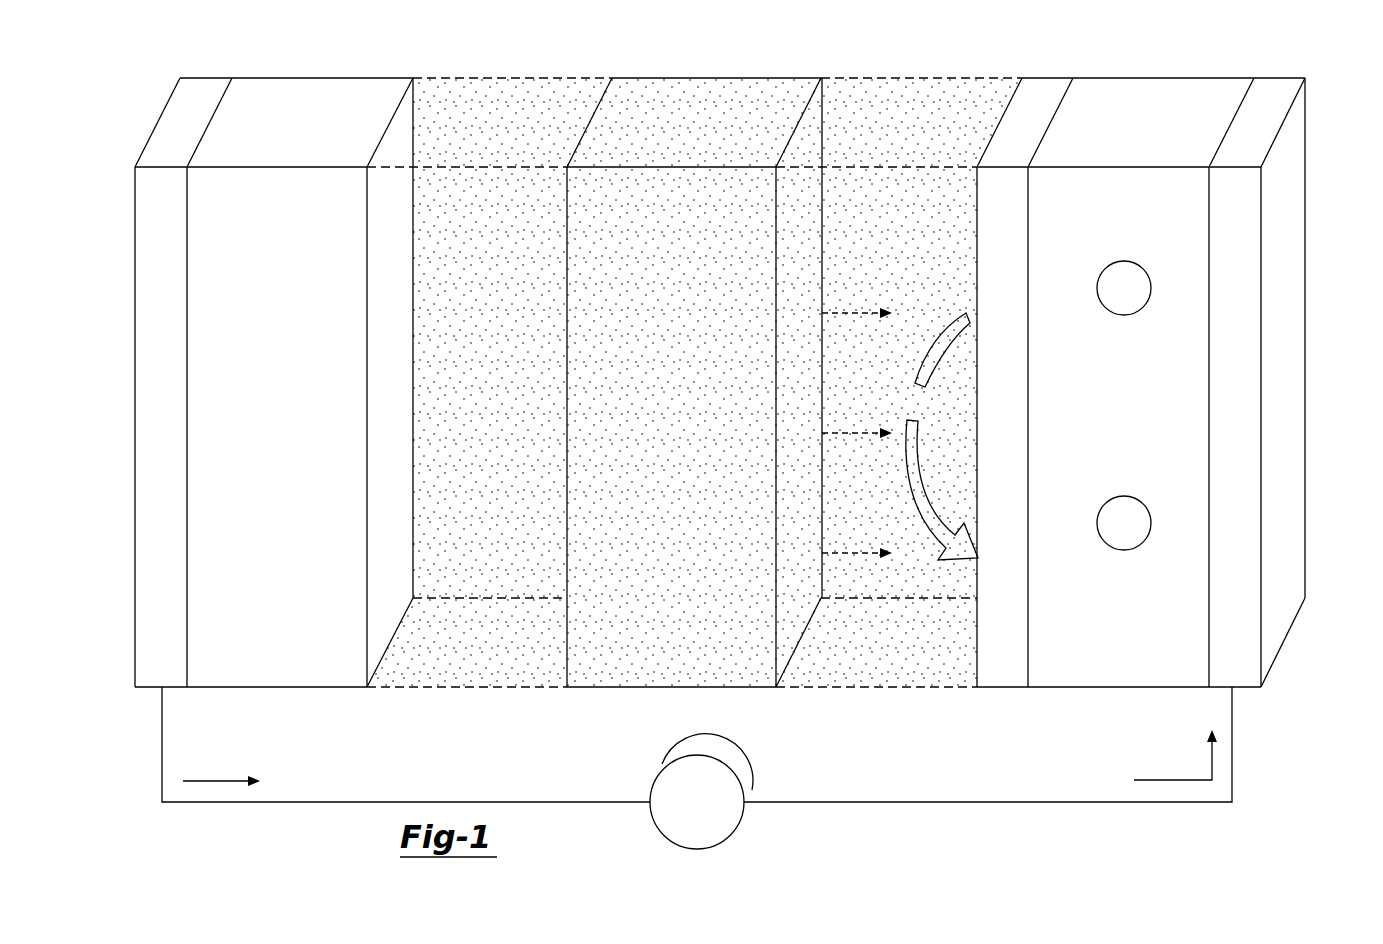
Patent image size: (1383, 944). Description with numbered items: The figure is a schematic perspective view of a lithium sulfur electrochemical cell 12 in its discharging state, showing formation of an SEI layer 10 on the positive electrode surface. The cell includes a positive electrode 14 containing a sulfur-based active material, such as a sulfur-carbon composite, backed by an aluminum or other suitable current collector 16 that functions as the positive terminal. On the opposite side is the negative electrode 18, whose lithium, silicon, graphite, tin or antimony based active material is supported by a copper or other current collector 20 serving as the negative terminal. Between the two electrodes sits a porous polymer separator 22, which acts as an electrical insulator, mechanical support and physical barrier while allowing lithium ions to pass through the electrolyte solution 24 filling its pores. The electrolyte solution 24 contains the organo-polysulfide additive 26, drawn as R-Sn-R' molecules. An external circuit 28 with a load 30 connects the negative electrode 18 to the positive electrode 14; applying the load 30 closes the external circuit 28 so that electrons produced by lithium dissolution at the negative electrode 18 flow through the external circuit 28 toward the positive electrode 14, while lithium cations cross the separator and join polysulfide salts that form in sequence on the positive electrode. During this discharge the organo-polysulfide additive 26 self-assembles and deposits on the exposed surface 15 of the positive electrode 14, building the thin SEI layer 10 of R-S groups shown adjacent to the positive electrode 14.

The SEI layer 10 is at (1046, 70).
The lithium sulfur electrochemical cell 12 is at (1320, 695).
The positive electrode 14 is at (1135, 418).
The exposed surface of the positive electrode 15 is at (1062, 88).
The current collector 16 is at (1278, 205).
The negative electrode 18 is at (284, 414).
The current collector 20 is at (158, 595).
The porous polymer separator 22 is at (717, 86).
The electrolyte solution 24 is at (925, 86).
The organo-polysulfide additive 26 is at (440, 236).
The external circuit 28 is at (997, 803).
The load 30 is at (710, 809).